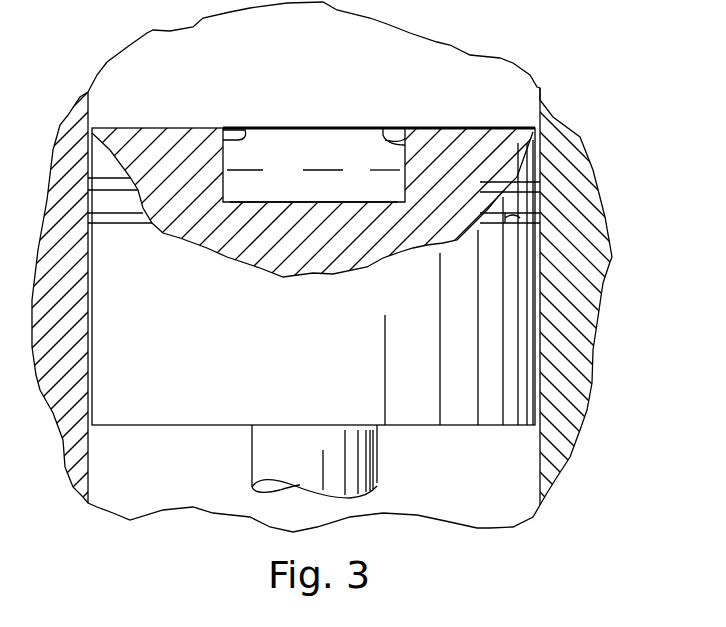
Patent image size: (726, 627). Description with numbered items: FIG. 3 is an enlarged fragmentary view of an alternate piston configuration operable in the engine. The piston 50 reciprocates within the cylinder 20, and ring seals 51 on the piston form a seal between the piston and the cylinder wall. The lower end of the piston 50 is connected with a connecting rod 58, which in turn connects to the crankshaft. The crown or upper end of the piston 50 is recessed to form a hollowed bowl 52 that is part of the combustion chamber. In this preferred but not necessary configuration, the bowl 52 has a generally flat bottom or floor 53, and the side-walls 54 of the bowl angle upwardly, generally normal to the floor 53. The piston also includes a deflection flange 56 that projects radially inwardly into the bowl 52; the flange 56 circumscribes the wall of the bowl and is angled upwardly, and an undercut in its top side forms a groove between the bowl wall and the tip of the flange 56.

The cylinder 20 is at (88, 461).
The piston 50 is at (314, 275).
The ring seals 51 is at (517, 218).
The bowl 52 is at (314, 165).
The floor 53 is at (353, 200).
The side-walls 54 is at (405, 197).
The deflection flange 56 is at (247, 138).
The connecting rod 58 is at (377, 467).